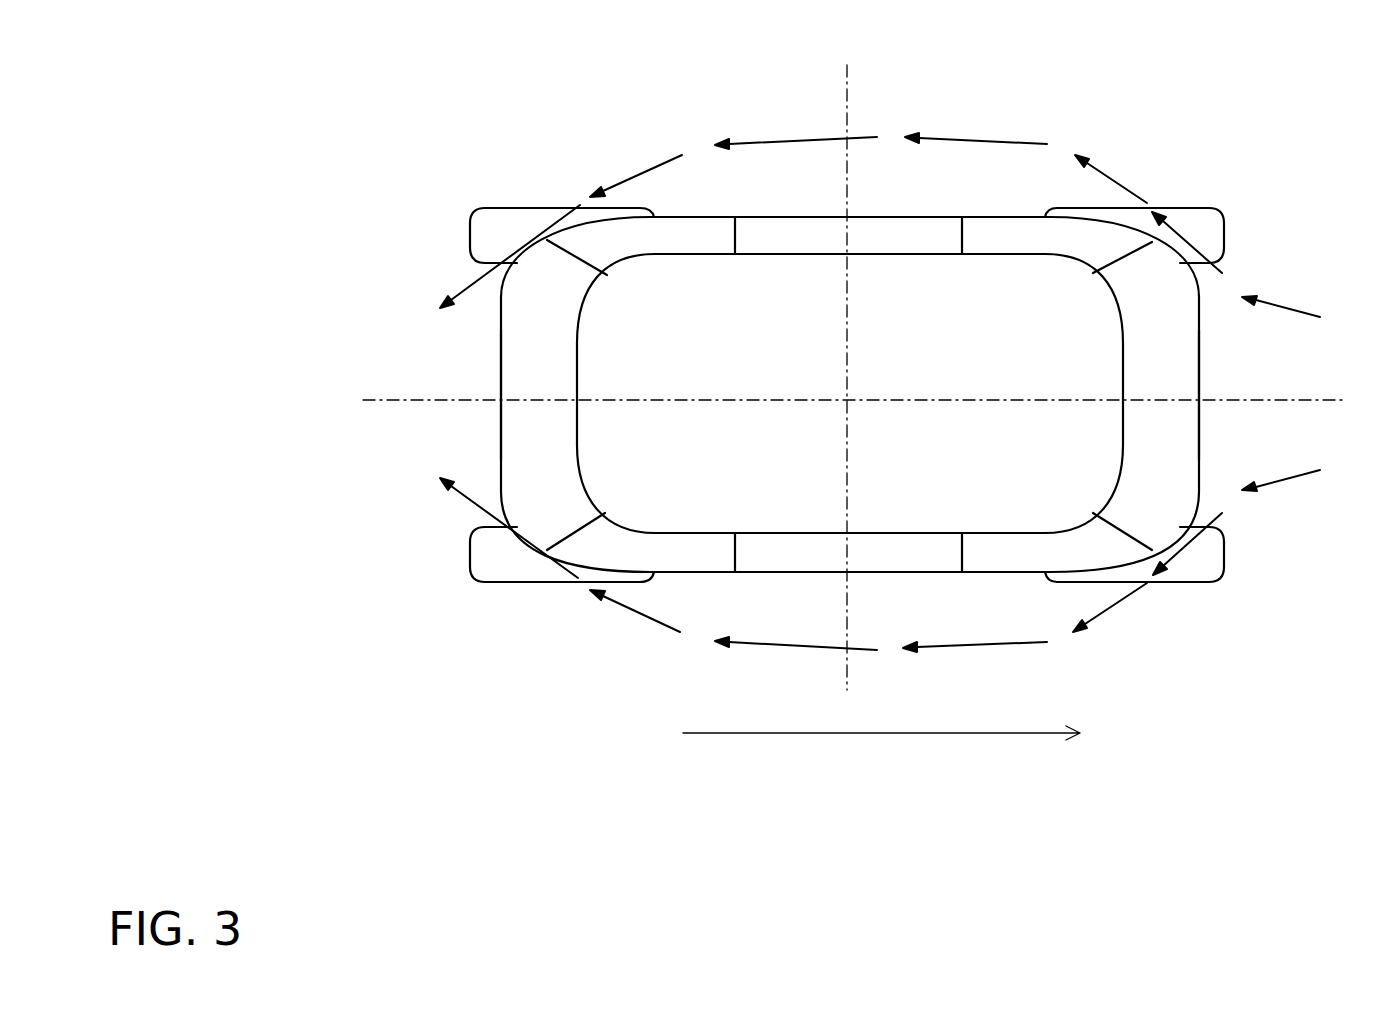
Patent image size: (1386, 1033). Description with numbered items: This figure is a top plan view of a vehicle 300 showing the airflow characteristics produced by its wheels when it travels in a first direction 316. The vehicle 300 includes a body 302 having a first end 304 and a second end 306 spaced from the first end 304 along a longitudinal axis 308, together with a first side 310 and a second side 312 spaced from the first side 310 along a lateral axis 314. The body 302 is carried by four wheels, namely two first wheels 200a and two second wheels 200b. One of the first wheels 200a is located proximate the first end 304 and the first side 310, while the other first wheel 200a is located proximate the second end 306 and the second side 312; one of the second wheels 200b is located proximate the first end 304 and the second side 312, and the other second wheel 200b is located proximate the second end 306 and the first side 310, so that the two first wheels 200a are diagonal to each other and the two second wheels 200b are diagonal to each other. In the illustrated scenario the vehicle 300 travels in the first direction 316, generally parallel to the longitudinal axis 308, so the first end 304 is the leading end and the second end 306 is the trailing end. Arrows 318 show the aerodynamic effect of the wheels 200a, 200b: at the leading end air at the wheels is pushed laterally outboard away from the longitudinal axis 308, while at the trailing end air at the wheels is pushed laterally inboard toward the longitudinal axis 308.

The first wheels 200a is at (1220, 230).
The second wheels 200b is at (490, 215).
The vehicle 300 is at (1188, 108).
The body 302 is at (993, 506).
The first end 304 is at (1192, 388).
The second end 306 is at (510, 385).
The longitudinal axis 308 is at (722, 396).
The first side 310 is at (916, 216).
The second side 312 is at (907, 573).
The lateral axis 314 is at (850, 328).
The first direction 316 is at (726, 733).
The arrows 318 is at (970, 140).